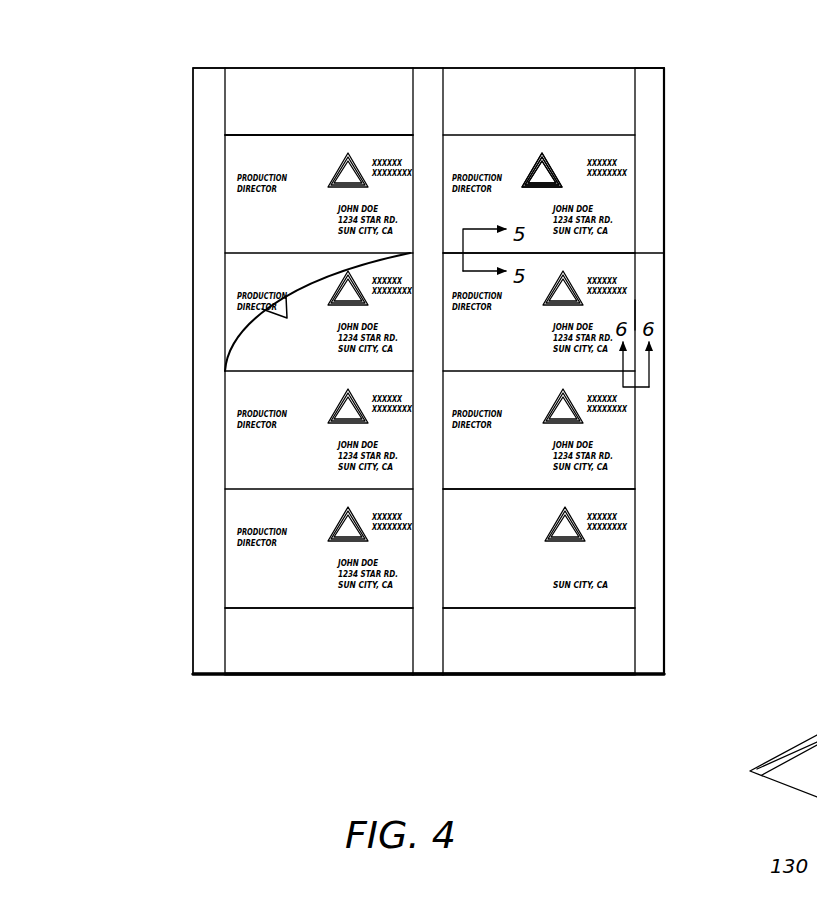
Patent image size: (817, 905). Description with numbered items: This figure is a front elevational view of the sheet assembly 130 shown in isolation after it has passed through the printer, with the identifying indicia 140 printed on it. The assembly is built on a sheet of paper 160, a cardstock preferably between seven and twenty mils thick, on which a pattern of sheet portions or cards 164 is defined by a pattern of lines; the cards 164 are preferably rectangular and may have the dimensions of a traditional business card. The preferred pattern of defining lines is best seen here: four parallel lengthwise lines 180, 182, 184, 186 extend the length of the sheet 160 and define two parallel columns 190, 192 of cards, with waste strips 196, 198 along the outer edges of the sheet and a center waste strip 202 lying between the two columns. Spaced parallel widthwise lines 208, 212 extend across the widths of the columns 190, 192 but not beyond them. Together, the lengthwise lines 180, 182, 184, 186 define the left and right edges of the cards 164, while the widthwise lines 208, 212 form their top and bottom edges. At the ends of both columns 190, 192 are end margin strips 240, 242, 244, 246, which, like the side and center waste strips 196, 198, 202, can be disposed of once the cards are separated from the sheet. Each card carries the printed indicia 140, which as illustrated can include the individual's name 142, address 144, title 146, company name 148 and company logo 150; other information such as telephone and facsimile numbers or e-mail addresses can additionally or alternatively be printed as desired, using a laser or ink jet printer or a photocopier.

The sheet assembly 130 is at (700, 148).
The identifying indicia 140 is at (562, 151).
The individual's name 142 is at (600, 560).
The address 144 is at (615, 574).
The title 146 is at (482, 548).
The company name 148 is at (410, 516).
The company logo 150 is at (330, 548).
The sheet of paper 160 is at (655, 253).
The sheet portions or cards 164 is at (628, 311).
The lengthwise line 180 is at (224, 108).
The lengthwise line 182 is at (413, 118).
The lengthwise line 184 is at (445, 108).
The lengthwise line 186 is at (635, 80).
The column 190 is at (383, 652).
The column 192 is at (508, 648).
The waste strip 196 is at (212, 660).
The waste strip 198 is at (665, 638).
The center waste strip 202 is at (428, 667).
The widthwise line 208 is at (243, 135).
The widthwise line 212 is at (620, 250).
The end margin strip 240 is at (305, 100).
The end margin strip 242 is at (622, 110).
The end margin strip 244 is at (302, 652).
The end margin strip 246 is at (608, 657).